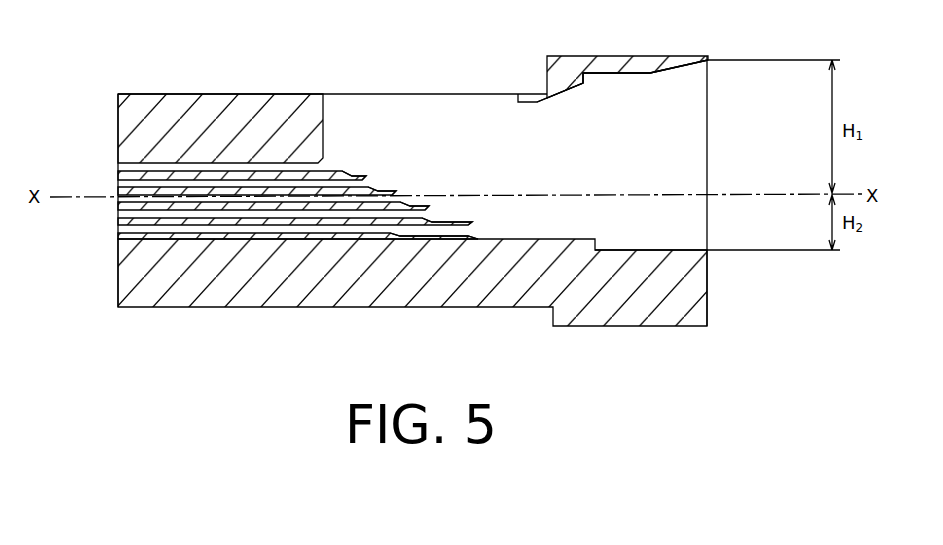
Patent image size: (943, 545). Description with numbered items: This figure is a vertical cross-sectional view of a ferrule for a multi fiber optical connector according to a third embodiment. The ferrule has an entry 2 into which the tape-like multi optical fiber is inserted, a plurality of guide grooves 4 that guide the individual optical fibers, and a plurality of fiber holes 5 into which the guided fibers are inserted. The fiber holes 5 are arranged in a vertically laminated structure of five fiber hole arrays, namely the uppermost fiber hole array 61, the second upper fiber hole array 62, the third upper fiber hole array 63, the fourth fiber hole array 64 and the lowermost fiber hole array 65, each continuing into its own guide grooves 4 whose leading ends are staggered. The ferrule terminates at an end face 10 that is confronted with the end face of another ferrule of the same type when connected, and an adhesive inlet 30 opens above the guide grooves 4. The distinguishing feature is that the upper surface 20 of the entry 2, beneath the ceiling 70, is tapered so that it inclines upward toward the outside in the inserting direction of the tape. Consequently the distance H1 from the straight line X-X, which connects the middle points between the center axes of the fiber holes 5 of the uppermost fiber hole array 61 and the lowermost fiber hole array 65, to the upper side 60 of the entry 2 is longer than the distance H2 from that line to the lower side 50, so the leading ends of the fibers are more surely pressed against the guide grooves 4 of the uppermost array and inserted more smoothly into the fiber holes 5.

The entry 2 is at (707, 222).
The guide grooves 4 is at (347, 171).
The fiber holes 5 is at (248, 223).
The uppermost fiber hole array 61 is at (118, 171).
The second upper fiber hole array 62 is at (118, 187).
The third upper fiber hole array 63 is at (118, 202).
The fourth fiber hole array 64 is at (118, 218).
The lowermost fiber hole array 65 is at (118, 233).
The end face 10 is at (117, 128).
The upper surface 20 is at (660, 73).
The adhesive inlet 30 is at (477, 115).
The lower side 50 is at (707, 250).
The upper side 60 is at (708, 59).
The ceiling 70 is at (628, 56).